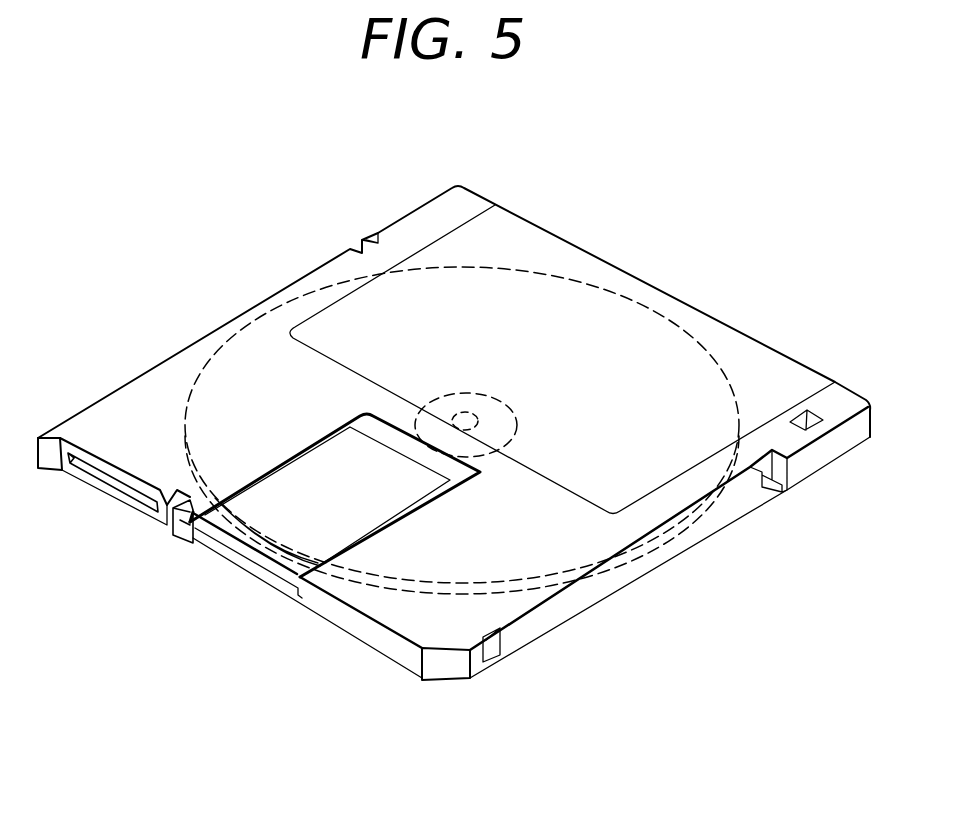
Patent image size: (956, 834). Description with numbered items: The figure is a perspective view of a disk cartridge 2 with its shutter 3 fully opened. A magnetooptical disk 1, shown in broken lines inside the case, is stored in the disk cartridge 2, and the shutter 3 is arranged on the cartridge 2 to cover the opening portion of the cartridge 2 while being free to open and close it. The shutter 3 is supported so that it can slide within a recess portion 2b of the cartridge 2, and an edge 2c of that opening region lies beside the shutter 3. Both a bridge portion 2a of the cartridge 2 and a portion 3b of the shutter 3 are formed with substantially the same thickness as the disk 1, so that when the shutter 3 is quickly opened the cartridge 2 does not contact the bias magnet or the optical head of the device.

The magnetooptical disk 1 is at (286, 488).
The disk cartridge 2 is at (540, 247).
The bridge portion 2a is at (195, 547).
The recess portion 2b is at (390, 430).
The opening edge 2c is at (362, 410).
The shutter 3 is at (373, 603).
The portion of the shutter 3b is at (277, 568).